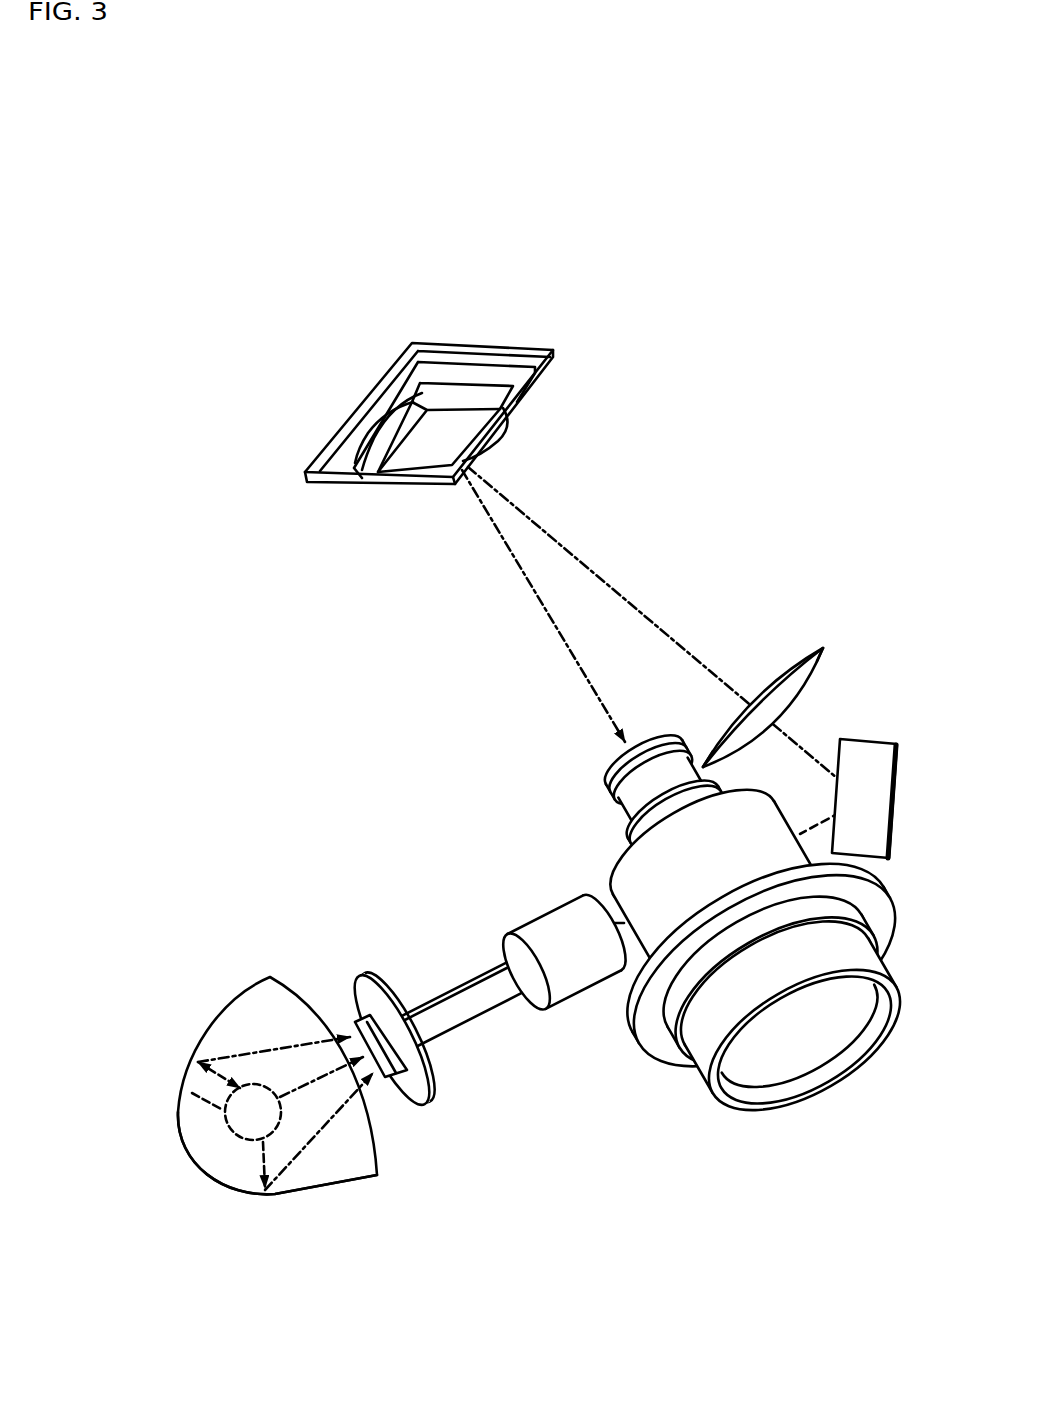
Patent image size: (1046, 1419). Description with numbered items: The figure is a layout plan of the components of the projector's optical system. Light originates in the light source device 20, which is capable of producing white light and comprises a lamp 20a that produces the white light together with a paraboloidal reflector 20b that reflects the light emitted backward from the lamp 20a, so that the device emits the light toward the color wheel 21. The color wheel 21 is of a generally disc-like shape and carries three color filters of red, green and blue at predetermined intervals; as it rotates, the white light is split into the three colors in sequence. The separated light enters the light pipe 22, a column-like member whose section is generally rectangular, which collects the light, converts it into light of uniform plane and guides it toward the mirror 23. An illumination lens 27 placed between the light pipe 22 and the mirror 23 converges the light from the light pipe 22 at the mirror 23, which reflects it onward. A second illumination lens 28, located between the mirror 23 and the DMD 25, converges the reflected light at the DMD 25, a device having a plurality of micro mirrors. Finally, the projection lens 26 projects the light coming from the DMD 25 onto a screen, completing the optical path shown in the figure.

The light source device 20 is at (225, 1205).
The lamp 20a is at (190, 1092).
The paraboloidal reflector 20b is at (318, 1197).
The color wheel 21 is at (366, 972).
The light pipe 22 is at (458, 1000).
The mirror 23 is at (870, 753).
The DMD 25 is at (523, 345).
The projection lens 26 is at (826, 1065).
The illumination lens 27 is at (563, 975).
The illumination lens 28 is at (807, 653).